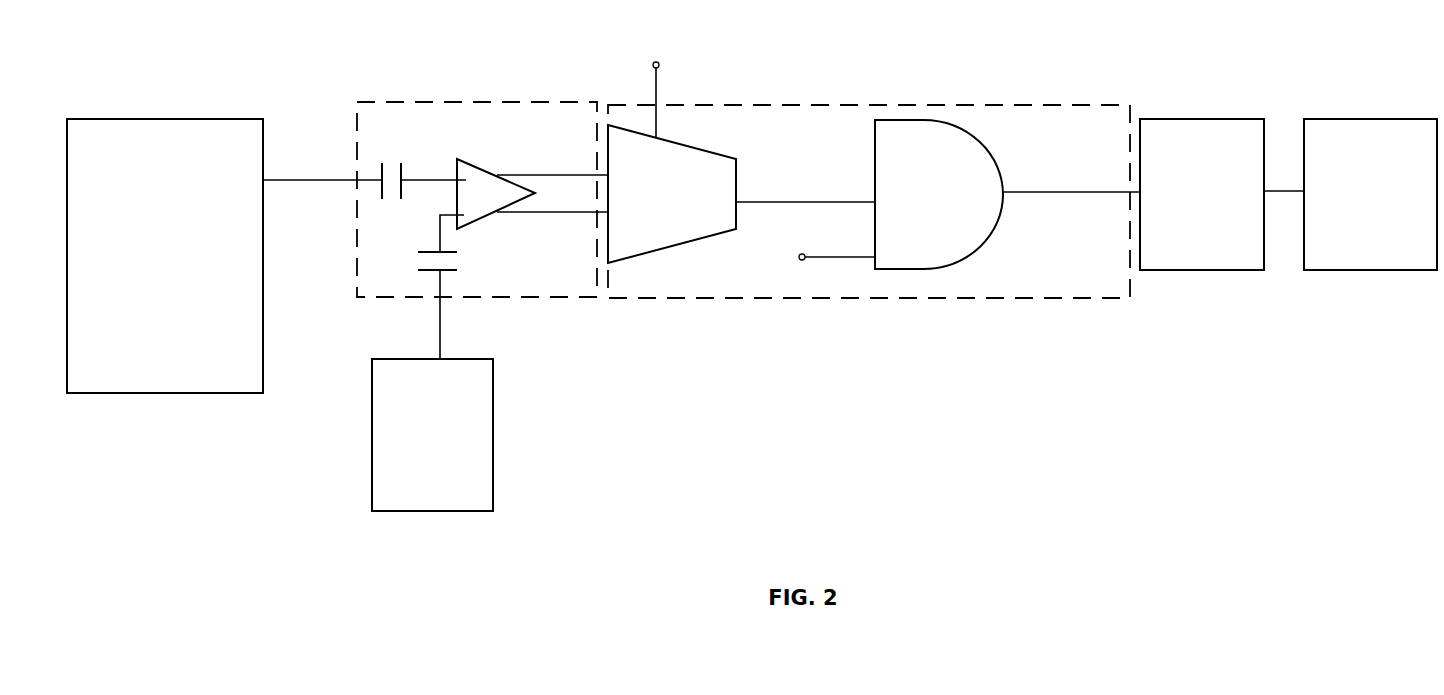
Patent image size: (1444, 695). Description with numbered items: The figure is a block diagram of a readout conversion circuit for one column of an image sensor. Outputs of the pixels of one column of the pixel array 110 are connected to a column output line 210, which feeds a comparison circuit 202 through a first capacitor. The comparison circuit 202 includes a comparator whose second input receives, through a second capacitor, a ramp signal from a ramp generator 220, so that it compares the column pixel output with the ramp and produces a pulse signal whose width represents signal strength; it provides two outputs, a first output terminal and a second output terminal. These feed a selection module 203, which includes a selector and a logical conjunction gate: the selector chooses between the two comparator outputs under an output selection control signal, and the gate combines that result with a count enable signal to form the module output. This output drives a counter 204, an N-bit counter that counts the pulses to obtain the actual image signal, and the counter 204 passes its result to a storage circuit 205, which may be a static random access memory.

The pixel array 110 is at (119, 117).
The column output line 210 is at (273, 178).
The comparison circuit 202 is at (457, 102).
The selection module 203 is at (818, 104).
The counter 204 is at (1188, 118).
The storage circuit 205 is at (1360, 118).
The ramp generator 220 is at (493, 433).